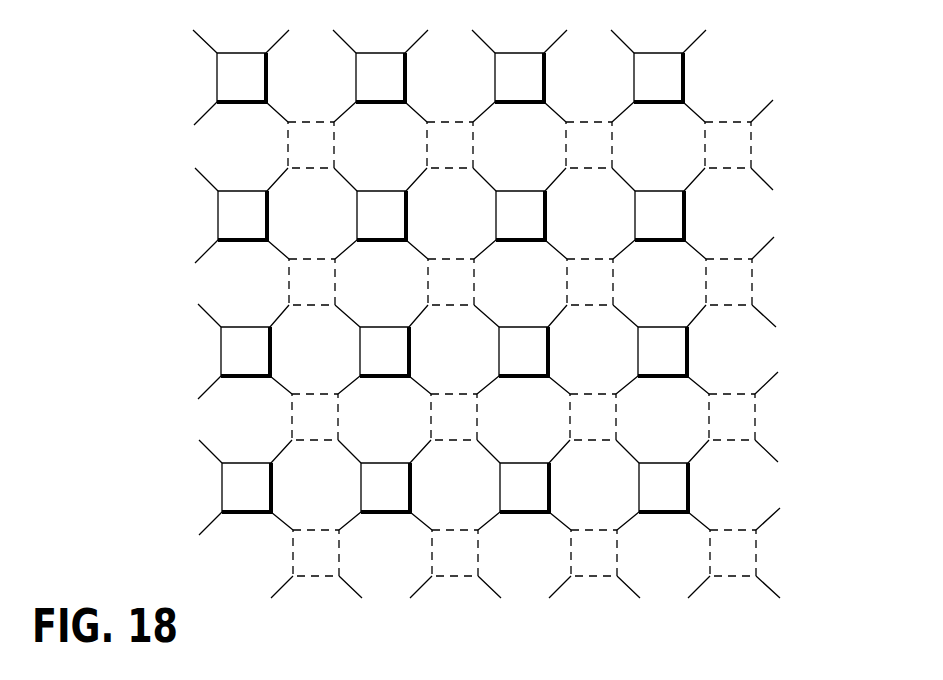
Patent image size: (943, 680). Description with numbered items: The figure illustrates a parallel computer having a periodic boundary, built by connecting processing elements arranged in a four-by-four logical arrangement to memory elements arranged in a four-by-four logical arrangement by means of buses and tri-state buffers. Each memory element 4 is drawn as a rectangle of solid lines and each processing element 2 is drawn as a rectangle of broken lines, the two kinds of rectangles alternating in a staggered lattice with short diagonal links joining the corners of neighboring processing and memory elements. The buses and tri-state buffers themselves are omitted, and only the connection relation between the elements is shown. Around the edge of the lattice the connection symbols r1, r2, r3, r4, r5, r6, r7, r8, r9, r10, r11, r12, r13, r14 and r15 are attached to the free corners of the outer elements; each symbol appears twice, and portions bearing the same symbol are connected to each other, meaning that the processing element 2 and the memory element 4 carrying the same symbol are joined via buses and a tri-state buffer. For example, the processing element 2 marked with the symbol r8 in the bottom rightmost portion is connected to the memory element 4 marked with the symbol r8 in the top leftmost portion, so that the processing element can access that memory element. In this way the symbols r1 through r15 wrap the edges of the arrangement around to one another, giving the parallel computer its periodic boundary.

The processing element 2 is at (752, 143).
The memory element 4 is at (684, 62).
The connection symbol r1 is at (488, 113).
The connection symbol r2 is at (488, 180).
The connection symbol r3 is at (488, 250).
The connection symbol r4 is at (488, 319).
The connection symbol r5 is at (488, 387).
The connection symbol r6 is at (488, 454).
The connection symbol r7 is at (489, 521).
The connection symbol r8 is at (489, 315).
The connection symbol r9 is at (698, 315).
The connection symbol r10 is at (628, 315).
The connection symbol r11 is at (558, 315).
The connection symbol r12 is at (487, 315).
The connection symbol r13 is at (421, 315).
The connection symbol r14 is at (350, 315).
The connection symbol r15 is at (276, 315).